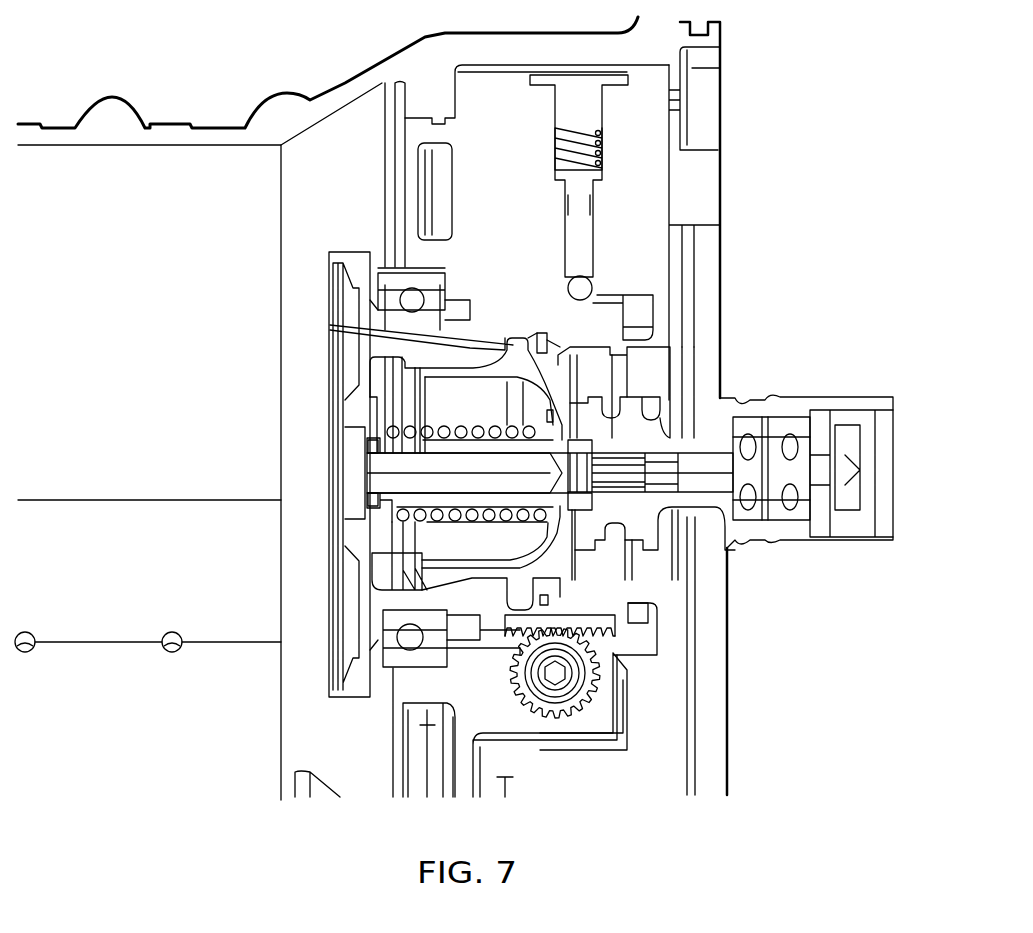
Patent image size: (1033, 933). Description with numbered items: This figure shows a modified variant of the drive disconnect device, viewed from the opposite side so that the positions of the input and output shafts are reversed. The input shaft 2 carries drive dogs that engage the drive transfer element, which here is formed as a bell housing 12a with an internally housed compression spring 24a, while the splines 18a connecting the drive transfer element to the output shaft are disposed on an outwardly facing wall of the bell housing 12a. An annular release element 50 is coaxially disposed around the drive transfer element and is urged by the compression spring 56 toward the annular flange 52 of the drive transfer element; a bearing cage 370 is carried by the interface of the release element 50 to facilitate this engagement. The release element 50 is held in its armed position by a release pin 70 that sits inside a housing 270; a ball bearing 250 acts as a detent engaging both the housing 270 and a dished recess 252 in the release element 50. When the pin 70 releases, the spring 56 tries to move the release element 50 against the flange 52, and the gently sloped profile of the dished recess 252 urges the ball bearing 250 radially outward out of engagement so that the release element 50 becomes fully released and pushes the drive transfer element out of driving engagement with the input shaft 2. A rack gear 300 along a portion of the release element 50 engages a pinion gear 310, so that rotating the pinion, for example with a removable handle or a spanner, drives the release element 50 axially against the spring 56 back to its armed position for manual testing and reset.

The input shaft 2 is at (720, 548).
The bell housing 12a is at (443, 373).
The splines 18a is at (433, 590).
The internally housed compression spring 24a is at (443, 520).
The release element 50 is at (607, 320).
The annular flange 52 is at (330, 325).
The spring 56 is at (650, 625).
The release pin 70 is at (583, 230).
The ball bearing 250 is at (585, 288).
The dished recess 252 is at (597, 297).
The housing 270 is at (640, 253).
The rack gear 300 is at (603, 620).
The pinion gear 310 is at (590, 683).
The bearing cage 370 is at (543, 337).